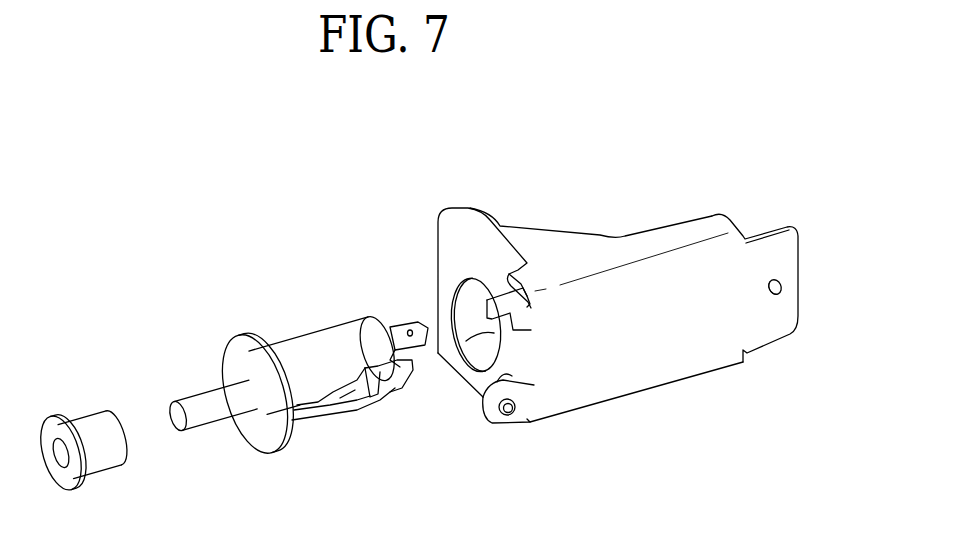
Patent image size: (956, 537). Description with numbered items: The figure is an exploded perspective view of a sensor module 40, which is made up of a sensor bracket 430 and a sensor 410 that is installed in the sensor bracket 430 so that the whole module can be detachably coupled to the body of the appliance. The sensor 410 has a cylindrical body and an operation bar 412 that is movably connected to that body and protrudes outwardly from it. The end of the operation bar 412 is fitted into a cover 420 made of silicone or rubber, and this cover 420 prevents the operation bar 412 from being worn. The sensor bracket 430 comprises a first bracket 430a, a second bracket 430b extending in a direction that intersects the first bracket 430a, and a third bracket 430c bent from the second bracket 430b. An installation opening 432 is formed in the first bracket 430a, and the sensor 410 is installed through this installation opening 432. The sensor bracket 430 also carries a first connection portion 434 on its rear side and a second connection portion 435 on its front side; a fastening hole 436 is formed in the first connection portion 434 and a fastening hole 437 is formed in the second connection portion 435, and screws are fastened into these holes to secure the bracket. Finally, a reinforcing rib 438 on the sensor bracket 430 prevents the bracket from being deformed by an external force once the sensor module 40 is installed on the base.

The sensor module 40 is at (371, 182).
The sensor 410 is at (321, 338).
The operation bar 412 is at (208, 397).
The cover 420 is at (92, 420).
The sensor bracket 430 is at (668, 215).
The first bracket 430a is at (457, 222).
The second bracket 430b is at (587, 390).
The third bracket 430c is at (533, 237).
The installation opening 432 is at (472, 278).
The first connection portion 434 is at (777, 325).
The second connection portion 435 is at (495, 432).
The fastening hole 436 is at (781, 289).
The fastening hole 437 is at (517, 423).
The reinforcing rib 438 is at (560, 283).